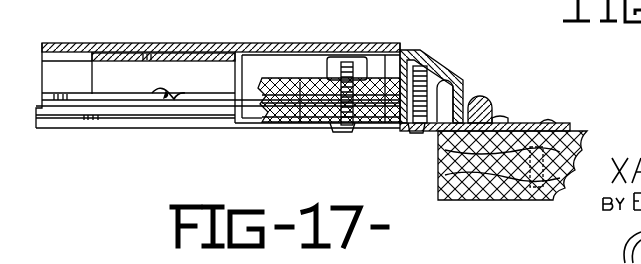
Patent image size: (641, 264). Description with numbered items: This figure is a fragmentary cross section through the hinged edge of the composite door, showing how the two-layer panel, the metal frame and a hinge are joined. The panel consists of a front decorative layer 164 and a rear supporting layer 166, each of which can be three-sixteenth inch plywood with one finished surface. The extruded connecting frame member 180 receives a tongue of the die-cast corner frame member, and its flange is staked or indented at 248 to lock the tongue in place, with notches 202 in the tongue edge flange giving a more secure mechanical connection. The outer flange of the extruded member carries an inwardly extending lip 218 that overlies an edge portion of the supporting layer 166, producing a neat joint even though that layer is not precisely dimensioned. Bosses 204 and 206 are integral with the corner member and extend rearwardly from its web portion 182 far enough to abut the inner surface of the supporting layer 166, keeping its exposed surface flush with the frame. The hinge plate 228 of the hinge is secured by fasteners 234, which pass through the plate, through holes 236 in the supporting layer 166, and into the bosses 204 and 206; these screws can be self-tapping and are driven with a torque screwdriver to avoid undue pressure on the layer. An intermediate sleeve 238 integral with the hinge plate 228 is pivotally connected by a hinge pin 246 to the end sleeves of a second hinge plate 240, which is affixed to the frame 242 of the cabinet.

The connecting frame member 180 is at (131, 34).
The web portion 182 is at (402, 50).
The notches 202 is at (161, 98).
The boss 204 is at (394, 68).
The boss 206 is at (327, 72).
The lip 218 is at (43, 127).
The hinge plate 228 is at (243, 130).
The fasteners 234 is at (422, 64).
The holes 236 is at (427, 137).
The intermediate sleeve 238 is at (470, 97).
The second hinge plate 240 is at (561, 124).
The cabinet frame 242 is at (438, 195).
The hinge pin 246 is at (489, 106).
The staked indentation 248 is at (174, 121).
The decorative layer 164 is at (300, 80).
The supporting layer 166 is at (293, 121).